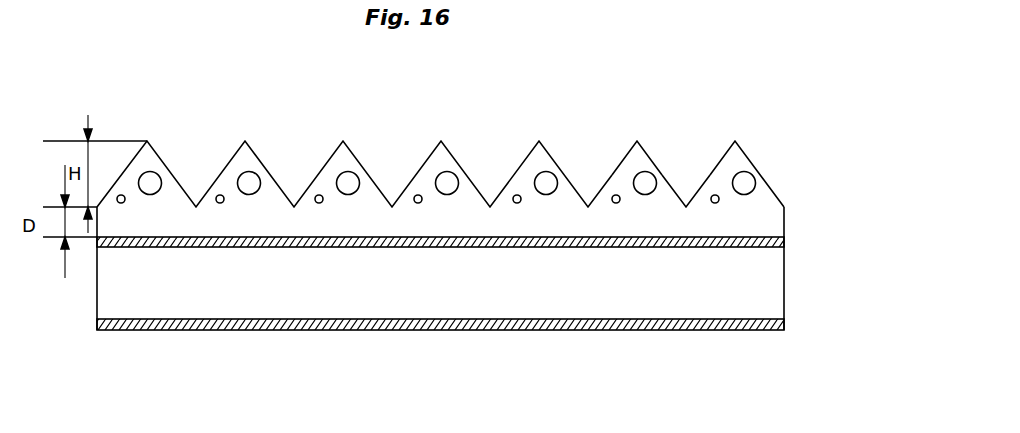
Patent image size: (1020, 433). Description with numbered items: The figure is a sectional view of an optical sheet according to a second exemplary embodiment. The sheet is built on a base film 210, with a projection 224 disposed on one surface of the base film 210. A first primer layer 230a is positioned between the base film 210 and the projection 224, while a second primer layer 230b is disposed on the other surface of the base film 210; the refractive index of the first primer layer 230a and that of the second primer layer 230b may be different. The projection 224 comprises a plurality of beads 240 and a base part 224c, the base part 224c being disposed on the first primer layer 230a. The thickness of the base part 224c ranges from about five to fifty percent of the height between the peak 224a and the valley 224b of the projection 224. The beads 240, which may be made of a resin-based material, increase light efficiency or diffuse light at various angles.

The base film 210 is at (779, 286).
The projection 224 is at (763, 180).
The peak 224a is at (637, 140).
The valley 224b is at (686, 205).
The base part 224c is at (778, 222).
The first primer layer 230a is at (782, 242).
The second primer layer 230b is at (782, 324).
The beads 240 is at (746, 172).